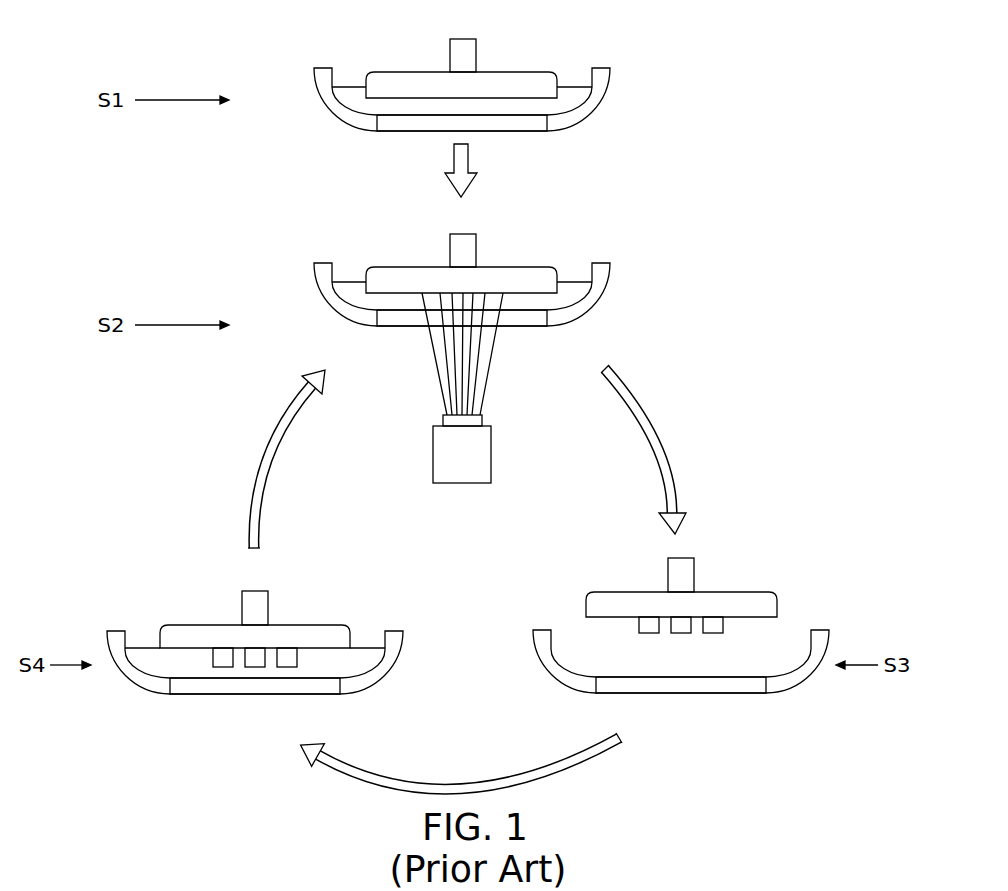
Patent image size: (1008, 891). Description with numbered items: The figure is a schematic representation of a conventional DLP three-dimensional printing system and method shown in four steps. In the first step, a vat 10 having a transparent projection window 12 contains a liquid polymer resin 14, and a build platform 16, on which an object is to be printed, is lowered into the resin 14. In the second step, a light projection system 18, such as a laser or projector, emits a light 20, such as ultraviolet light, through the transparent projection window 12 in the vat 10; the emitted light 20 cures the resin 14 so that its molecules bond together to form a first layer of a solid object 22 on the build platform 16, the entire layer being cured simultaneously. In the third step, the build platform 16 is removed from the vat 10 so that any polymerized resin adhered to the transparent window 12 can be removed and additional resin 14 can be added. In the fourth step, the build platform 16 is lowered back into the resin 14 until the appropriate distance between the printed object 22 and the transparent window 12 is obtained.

The vat 10 is at (592, 112).
The transparent projection window 12 is at (507, 131).
The liquid polymer resin 14 is at (571, 87).
The build platform 16 is at (410, 72).
The light projection system 18 is at (491, 455).
The light 20 is at (437, 381).
The solid object 22 is at (420, 300).